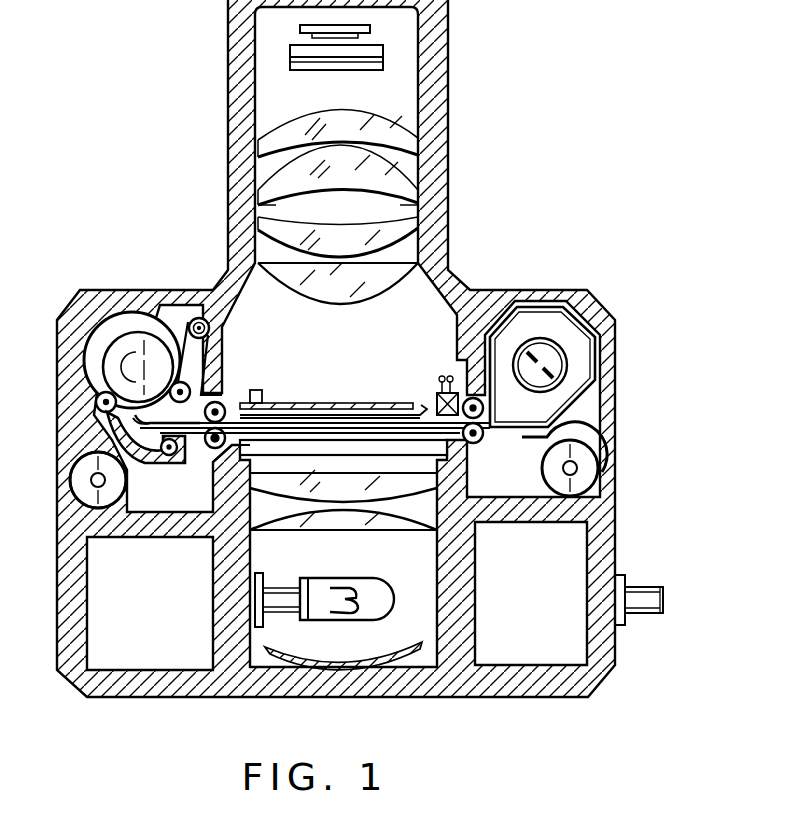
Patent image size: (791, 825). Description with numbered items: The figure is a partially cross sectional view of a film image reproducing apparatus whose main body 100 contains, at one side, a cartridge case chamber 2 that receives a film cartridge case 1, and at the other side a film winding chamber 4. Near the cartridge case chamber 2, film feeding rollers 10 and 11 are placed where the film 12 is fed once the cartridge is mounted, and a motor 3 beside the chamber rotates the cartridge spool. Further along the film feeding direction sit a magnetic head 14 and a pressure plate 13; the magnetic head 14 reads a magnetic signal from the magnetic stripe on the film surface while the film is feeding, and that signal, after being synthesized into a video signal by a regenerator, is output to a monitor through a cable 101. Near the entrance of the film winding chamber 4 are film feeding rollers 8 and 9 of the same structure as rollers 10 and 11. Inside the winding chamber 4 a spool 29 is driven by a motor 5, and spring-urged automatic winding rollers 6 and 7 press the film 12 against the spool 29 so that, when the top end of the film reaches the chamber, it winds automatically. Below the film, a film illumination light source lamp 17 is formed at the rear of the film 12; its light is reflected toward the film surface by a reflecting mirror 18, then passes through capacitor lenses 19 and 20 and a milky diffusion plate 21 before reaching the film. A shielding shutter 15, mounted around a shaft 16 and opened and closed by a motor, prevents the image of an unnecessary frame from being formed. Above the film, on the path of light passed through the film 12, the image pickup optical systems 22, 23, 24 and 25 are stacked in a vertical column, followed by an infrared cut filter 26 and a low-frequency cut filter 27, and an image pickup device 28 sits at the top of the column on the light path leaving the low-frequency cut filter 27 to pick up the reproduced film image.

The film cartridge case 1 is at (553, 342).
The cartridge case chamber 2 is at (542, 303).
The motor 3 is at (590, 470).
The film winding chamber 4 is at (113, 325).
The motor 5 is at (83, 470).
The automatic winding roller 6 is at (97, 398).
The automatic winding roller 7 is at (183, 380).
The film feeding roller 8 is at (231, 397).
The film feeding roller 9 is at (207, 443).
The film feeding roller 10 is at (465, 396).
The film feeding roller 11 is at (482, 440).
The film 12 is at (230, 410).
The pressure plate 13 is at (420, 407).
The magnetic head 14 is at (437, 397).
The shielding shutter 15 is at (290, 402).
The shaft 16 is at (258, 390).
The film illumination light source lamp 17 is at (385, 580).
The reflecting mirror 18 is at (392, 644).
The capacitor lens 19 is at (285, 527).
The capacitor lens 20 is at (427, 483).
The diffusion plate 21 is at (217, 475).
The image pickup optical system 22 is at (350, 303).
The image pickup optical system 23 is at (413, 220).
The image pickup optical system 24 is at (270, 187).
The image pickup optical system 25 is at (393, 125).
The infrared cut filter 26 is at (290, 68).
The low-frequency cut filter 27 is at (290, 50).
The image pickup device 28 is at (370, 32).
The spool 29 is at (142, 338).
The main body 100 is at (420, 697).
The cable 101 is at (645, 614).